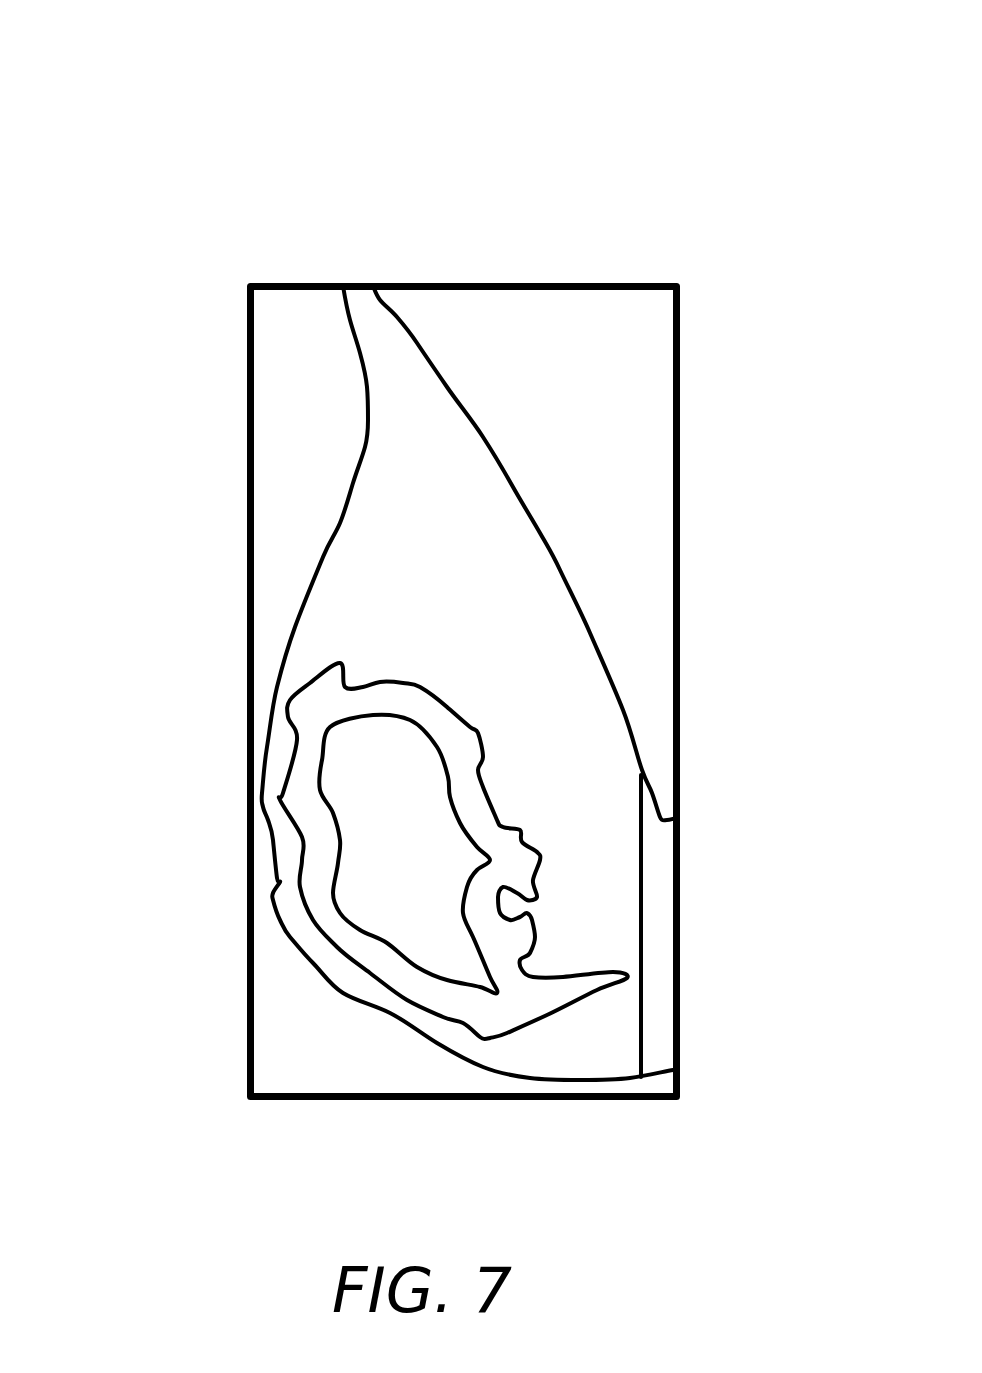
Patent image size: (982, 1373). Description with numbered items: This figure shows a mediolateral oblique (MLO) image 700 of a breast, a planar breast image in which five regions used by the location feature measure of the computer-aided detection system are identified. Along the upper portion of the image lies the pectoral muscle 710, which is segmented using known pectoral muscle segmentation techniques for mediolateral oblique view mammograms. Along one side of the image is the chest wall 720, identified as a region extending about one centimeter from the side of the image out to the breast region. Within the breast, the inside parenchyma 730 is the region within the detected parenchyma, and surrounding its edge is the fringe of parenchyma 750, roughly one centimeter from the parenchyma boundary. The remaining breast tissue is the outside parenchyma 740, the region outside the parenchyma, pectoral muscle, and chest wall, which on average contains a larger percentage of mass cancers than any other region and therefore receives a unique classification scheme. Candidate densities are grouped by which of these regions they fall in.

The mediolateral oblique (MLO) image 700 is at (270, 282).
The pectoral muscle 710 is at (555, 320).
The chest wall 720 is at (670, 920).
The inside parenchyma 730 is at (402, 920).
The outside parenchyma 740 is at (513, 693).
The fringe of parenchyma 750 is at (312, 722).